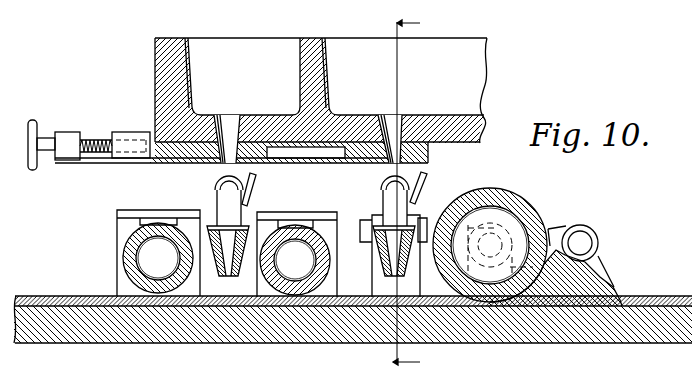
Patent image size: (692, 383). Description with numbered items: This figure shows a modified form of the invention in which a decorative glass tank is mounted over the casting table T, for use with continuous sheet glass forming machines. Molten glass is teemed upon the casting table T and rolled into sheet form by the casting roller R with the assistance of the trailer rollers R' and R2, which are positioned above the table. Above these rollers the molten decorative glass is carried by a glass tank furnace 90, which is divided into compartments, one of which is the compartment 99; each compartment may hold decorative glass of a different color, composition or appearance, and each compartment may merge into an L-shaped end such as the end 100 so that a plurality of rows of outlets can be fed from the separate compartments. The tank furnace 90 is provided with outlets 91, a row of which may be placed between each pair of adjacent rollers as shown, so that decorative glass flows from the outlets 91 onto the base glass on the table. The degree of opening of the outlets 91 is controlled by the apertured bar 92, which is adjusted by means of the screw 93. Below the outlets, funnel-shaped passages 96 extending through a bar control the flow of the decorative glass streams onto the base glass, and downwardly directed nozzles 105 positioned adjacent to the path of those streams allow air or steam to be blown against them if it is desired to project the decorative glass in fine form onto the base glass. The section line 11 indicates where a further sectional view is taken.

The compartment 99 is at (468, 68).
The L-shaped end 100 is at (231, 55).
The glass tank furnace 90 is at (315, 92).
The outlets 91 is at (232, 119).
The apertured bar 92 is at (197, 161).
The screw 93 is at (47, 136).
The funnel-shaped passages 96 is at (237, 238).
The nozzles 105 is at (259, 186).
The section line 11- 11 is at (440, 31).
The casting roller R is at (527, 244).
The first trailer roller R' is at (297, 242).
The trailer roller R2 is at (125, 243).
The casting table T is at (223, 343).